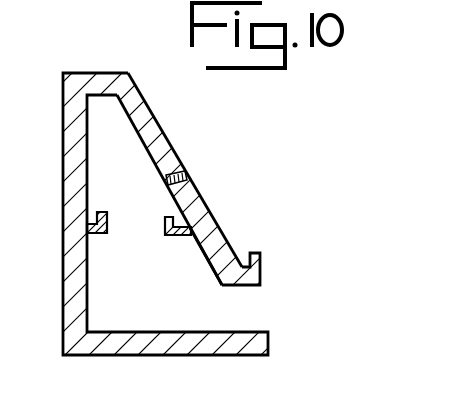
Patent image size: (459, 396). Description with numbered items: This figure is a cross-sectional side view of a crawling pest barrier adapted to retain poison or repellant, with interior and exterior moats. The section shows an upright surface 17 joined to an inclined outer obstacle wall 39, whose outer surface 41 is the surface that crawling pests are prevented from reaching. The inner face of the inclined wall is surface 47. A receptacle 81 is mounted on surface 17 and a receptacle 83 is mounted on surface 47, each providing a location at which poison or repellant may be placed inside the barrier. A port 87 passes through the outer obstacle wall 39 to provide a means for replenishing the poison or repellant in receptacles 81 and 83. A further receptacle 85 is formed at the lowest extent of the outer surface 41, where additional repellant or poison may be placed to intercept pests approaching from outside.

The surface 17 is at (88, 266).
The outer obstacle wall 39 is at (138, 107).
The outer surface 41 is at (158, 128).
The surface 47 is at (205, 257).
The receptacle 81 is at (96, 203).
The receptacle 83 is at (171, 208).
The receptacle 85 is at (241, 252).
The port 87 is at (189, 172).